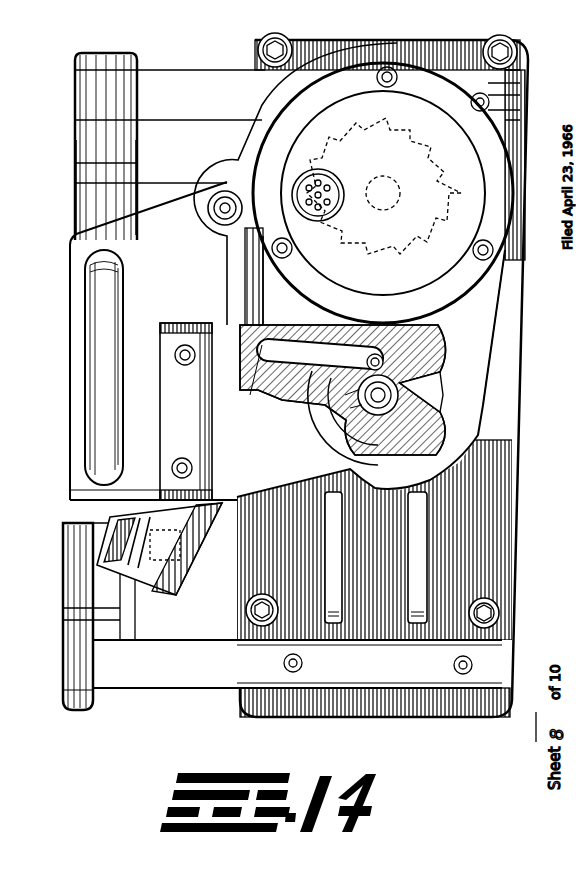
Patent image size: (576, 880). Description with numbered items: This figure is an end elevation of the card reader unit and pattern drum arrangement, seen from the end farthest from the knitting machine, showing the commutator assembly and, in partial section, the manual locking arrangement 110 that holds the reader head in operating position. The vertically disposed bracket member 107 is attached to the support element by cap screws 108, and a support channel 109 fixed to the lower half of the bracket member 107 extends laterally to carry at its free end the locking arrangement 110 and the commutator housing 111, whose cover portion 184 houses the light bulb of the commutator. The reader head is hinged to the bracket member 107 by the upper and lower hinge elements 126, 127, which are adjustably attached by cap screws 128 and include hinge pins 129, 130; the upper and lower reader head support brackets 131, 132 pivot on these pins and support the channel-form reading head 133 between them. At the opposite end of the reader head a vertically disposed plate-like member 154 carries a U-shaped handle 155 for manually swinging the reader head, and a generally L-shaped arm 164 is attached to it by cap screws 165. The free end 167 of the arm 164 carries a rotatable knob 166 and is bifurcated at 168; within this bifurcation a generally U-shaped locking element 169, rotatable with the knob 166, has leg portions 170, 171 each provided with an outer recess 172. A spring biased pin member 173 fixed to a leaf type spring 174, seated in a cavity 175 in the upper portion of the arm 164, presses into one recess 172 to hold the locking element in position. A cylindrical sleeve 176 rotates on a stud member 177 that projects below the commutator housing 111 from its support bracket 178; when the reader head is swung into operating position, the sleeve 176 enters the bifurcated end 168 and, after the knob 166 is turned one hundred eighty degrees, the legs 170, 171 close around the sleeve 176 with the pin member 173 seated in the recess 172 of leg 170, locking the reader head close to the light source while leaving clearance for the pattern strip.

The bracket member 107 is at (495, 527).
The cap screws 108 is at (497, 606).
The support channel 109 is at (418, 498).
The locking arrangement 110 is at (462, 381).
The commutator housing 111 is at (556, 202).
The upper hinge element 126 is at (190, 76).
The lower hinge element 127 is at (168, 640).
The cap screws 128 is at (488, 102).
The hinge pin 129 is at (92, 54).
The hinge pin 130 is at (85, 706).
The upper reader head support bracket 131 is at (100, 200).
The lower reader head support bracket 132 is at (90, 586).
The reading head 133 is at (75, 416).
The plate-like member 154 is at (95, 488).
The U-shaped handle 155 is at (92, 319).
The L-shaped arm 164 is at (180, 323).
The cap screws 165 is at (184, 366).
The rotatable knob 166 is at (330, 427).
The free end of arm 167 is at (440, 368).
The bifurcation 168 is at (428, 381).
The U-shaped locking element 169 is at (399, 395).
The leg portion 170 is at (350, 362).
The leg portion 171 is at (348, 432).
The recess 172 is at (420, 360).
The pin member 173 is at (375, 354).
The leaf type spring 174 is at (330, 338).
The cavity 175 is at (397, 345).
The cylindrical sleeve 176 is at (345, 395).
The stud member 177 is at (350, 408).
The support bracket 178 is at (470, 412).
The cover portion 184 is at (483, 237).